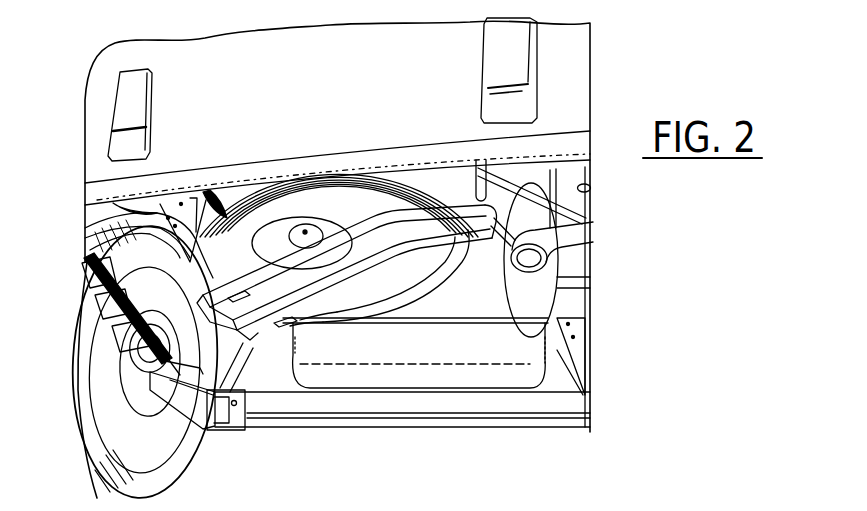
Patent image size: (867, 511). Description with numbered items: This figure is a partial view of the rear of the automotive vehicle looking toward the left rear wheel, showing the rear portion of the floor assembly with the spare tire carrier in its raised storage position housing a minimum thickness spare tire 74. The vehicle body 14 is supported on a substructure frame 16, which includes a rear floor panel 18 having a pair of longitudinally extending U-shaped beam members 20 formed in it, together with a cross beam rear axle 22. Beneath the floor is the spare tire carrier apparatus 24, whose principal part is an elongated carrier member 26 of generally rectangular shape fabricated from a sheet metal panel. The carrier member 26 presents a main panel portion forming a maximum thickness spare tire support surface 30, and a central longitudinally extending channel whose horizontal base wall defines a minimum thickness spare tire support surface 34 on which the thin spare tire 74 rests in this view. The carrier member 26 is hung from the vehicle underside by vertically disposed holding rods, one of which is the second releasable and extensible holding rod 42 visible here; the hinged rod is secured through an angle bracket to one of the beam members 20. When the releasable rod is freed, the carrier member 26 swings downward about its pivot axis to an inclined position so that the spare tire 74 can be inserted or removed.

The body 14 is at (597, 76).
The substructure frame 16 is at (587, 326).
The rear floor panel 18 is at (483, 277).
The U-shaped beam members 20 is at (88, 226).
The cross beam rear axle 22 is at (517, 430).
The spare tire carrier apparatus 24 is at (437, 300).
The carrier member 26 is at (378, 312).
The maximum thickness spare tire support surface 30 is at (352, 240).
The minimum thickness spare tire support surface 34 is at (308, 288).
The second releasable and extensible holding rod 42 is at (475, 185).
The minimum thickness spare tire 74 is at (409, 177).